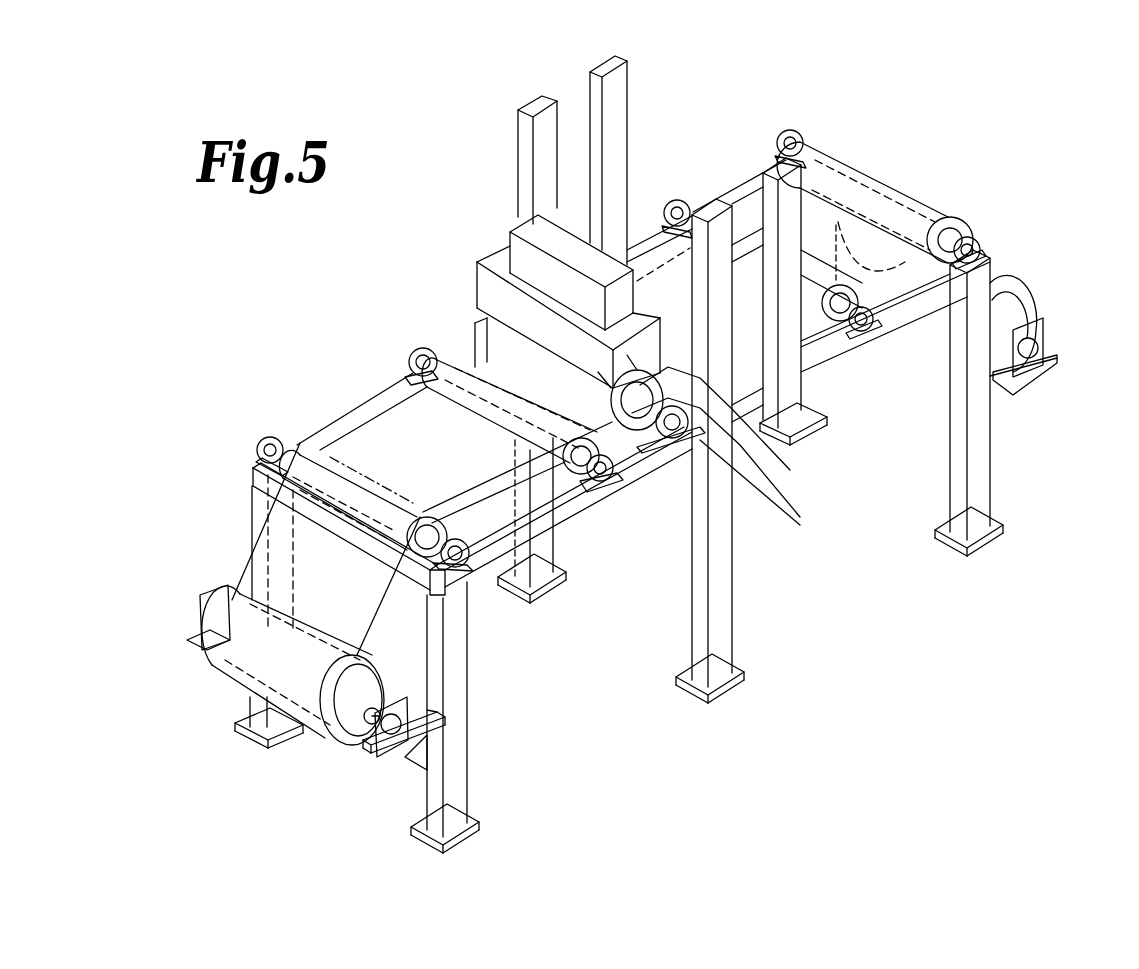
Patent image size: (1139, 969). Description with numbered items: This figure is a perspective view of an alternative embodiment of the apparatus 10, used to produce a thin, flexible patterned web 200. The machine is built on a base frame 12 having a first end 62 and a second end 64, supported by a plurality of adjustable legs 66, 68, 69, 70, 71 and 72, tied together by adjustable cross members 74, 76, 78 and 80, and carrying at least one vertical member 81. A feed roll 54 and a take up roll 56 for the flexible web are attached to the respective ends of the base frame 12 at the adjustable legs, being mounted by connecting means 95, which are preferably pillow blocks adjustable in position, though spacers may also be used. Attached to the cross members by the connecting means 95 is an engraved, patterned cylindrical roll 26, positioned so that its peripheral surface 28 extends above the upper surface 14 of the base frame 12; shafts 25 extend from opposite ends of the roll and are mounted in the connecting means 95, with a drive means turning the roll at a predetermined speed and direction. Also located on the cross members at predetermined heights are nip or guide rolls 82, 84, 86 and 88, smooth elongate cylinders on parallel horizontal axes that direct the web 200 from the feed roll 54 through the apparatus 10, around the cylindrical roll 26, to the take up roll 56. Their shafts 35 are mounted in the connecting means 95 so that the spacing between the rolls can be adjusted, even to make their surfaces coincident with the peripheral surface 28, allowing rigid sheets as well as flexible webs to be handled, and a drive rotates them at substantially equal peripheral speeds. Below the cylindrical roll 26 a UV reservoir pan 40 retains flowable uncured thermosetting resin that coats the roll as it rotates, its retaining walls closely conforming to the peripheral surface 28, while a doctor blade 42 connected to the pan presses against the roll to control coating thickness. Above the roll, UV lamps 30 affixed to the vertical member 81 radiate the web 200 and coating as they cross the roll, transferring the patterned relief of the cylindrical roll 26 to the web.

The apparatus 10 is at (757, 104).
The base frame 12 is at (683, 633).
The upper surface 14 is at (483, 552).
The shafts 25 is at (680, 432).
The cylindrical roll 26 is at (703, 428).
The peripheral surface 28 is at (740, 416).
The UV lamps 30 is at (492, 250).
The shafts 35 is at (440, 545).
The UV reservoir pan 40 is at (650, 436).
The doctor blade 42 is at (612, 436).
The feed roll 54 is at (1030, 300).
The take up roll 56 is at (212, 672).
The first end 62 is at (990, 258).
The second end 64 is at (437, 800).
The adjustable leg 66 is at (993, 478).
The adjustable leg 68 is at (810, 403).
The adjustable leg 69 is at (722, 673).
The adjustable leg 70 is at (480, 832).
The adjustable leg 71 is at (538, 572).
The adjustable leg 72 is at (255, 720).
The adjustable cross member 74 is at (843, 170).
The adjustable cross member 76 is at (733, 185).
The adjustable cross member 78 is at (275, 487).
The adjustable cross member 80 is at (790, 383).
The vertical member 81 is at (590, 82).
The nip roll 82 is at (951, 215).
The nip roll 84 is at (678, 200).
The nip roll 86 is at (442, 366).
The nip roll 88 is at (296, 445).
The connecting means 95 is at (703, 458).
The flexible patterned web 200 is at (240, 620).